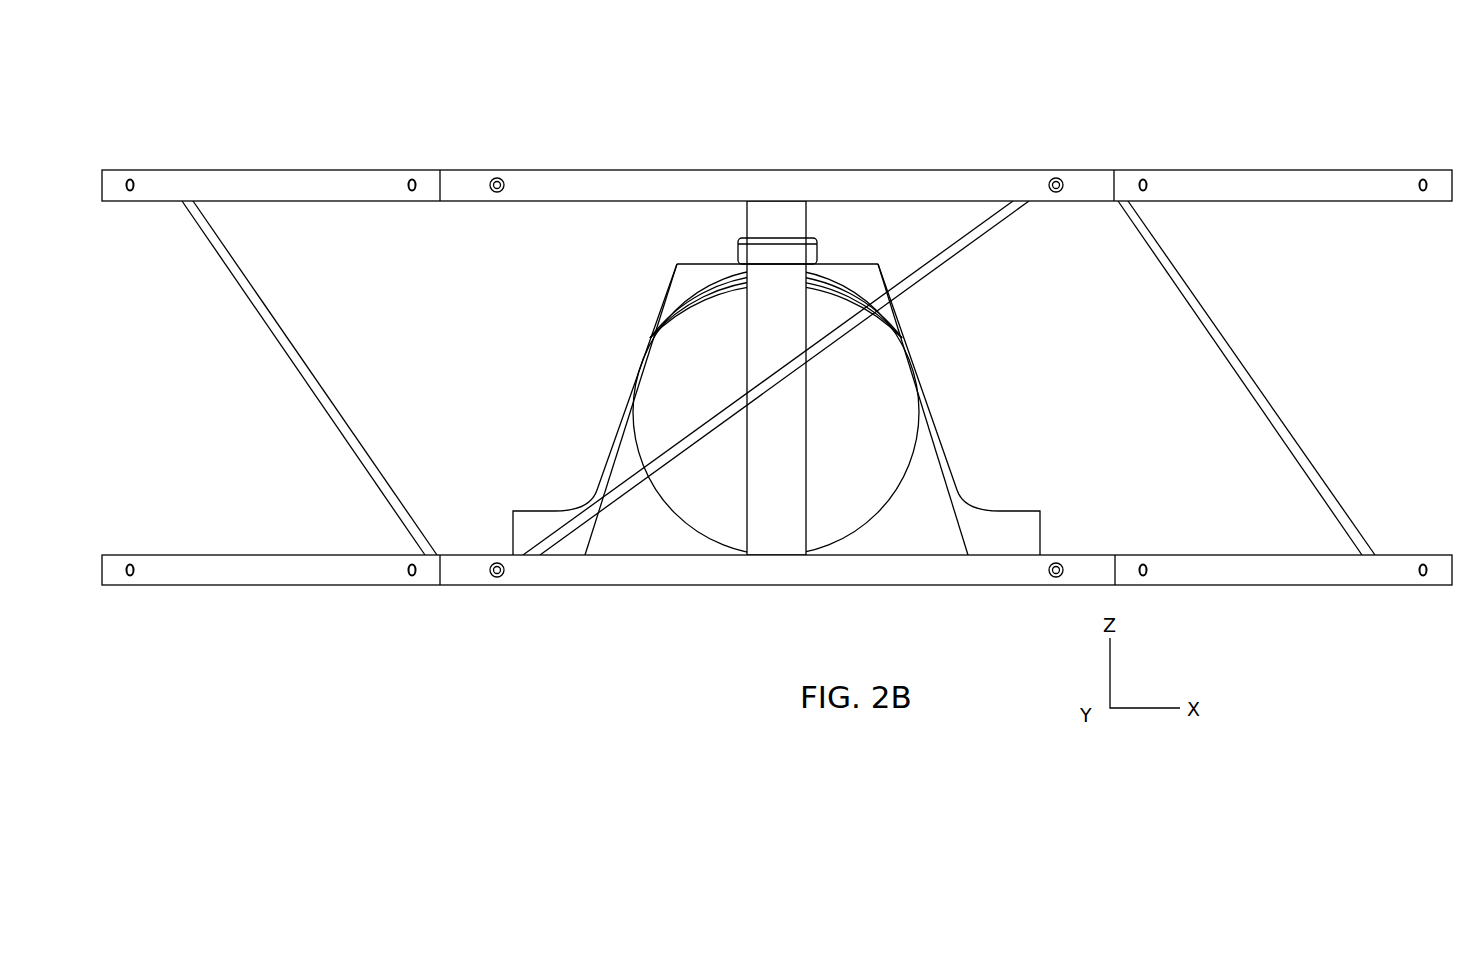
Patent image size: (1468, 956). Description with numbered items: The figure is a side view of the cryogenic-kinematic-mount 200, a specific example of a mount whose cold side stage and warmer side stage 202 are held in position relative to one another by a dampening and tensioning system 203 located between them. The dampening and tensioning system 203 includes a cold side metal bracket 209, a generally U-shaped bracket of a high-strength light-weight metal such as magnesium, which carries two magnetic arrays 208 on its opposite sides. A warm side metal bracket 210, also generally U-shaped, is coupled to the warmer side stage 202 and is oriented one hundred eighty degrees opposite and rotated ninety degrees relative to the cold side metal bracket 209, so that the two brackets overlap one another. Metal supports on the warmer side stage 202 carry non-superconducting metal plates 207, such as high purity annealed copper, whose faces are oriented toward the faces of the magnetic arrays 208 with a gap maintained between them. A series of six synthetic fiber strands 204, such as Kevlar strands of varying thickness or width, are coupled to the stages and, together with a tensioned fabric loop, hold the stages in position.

The cryogenic-kinematic-mount 200 is at (767, 351).
The warmer side stage 202 is at (1045, 150).
The dampening and tensioning system 203 is at (1275, 300).
The synthetic fiber strands 204 is at (283, 385).
The metal plates 207 is at (875, 478).
The magnetic arrays 208 is at (872, 265).
The cold side metal bracket 209 is at (790, 195).
The warm side metal bracket 210 is at (600, 408).